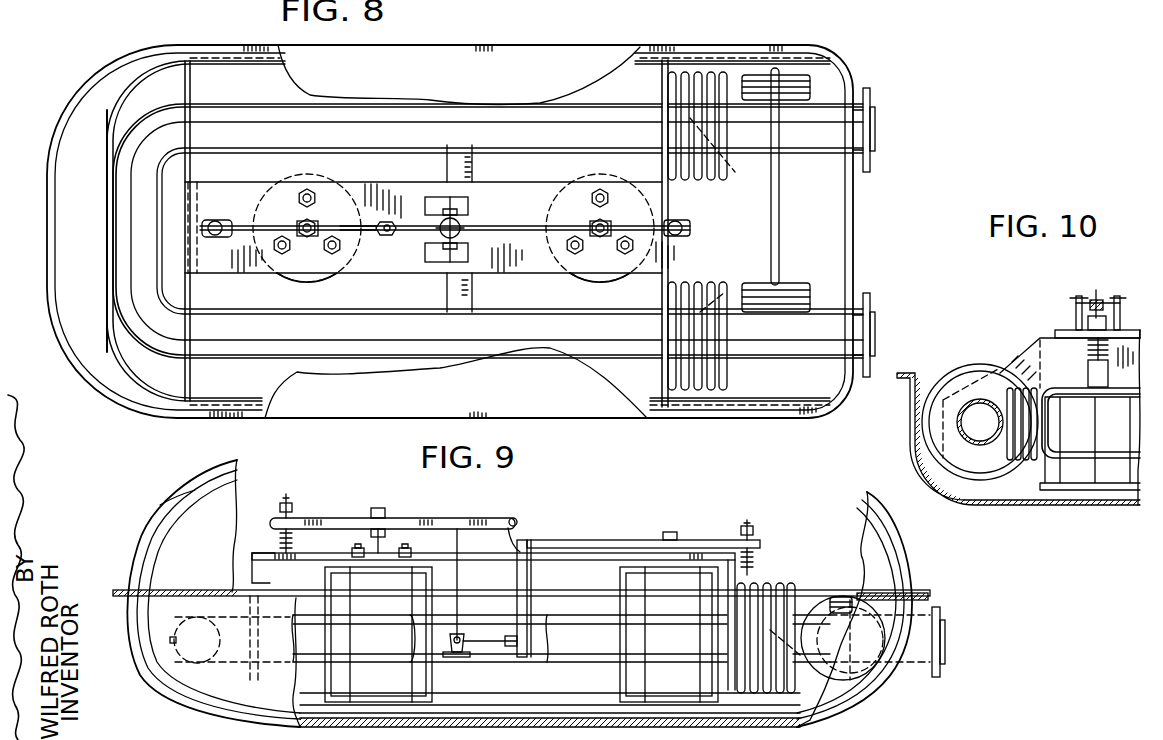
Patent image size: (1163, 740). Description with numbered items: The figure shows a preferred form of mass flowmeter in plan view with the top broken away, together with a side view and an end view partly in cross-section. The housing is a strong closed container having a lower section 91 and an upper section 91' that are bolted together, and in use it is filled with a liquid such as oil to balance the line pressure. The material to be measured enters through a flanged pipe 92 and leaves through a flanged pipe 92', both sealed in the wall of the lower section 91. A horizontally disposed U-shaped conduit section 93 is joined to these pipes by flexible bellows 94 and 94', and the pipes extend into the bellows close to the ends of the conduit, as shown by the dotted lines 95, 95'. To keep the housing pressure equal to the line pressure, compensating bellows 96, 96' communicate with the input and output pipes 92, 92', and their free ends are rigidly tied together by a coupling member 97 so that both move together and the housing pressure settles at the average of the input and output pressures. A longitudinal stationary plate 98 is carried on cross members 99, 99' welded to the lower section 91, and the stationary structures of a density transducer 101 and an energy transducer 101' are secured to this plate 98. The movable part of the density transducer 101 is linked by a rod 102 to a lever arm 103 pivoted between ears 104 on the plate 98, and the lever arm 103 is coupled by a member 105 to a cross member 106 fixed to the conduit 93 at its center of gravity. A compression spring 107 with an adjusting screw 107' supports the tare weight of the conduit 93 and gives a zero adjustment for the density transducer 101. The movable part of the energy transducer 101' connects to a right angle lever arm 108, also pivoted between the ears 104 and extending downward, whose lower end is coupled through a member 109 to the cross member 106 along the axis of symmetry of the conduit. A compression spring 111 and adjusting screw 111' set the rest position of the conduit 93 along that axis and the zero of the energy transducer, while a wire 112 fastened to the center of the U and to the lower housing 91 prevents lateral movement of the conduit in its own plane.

In FIG. 8, the lower section 91 is at (444, 231).
In FIG. 9, the lower section 91 is at (510, 593).
In FIG. 10, the lower section 91 is at (1018, 432).
In FIG. 8, the upper section 91' is at (468, 205).
In FIG. 9, the upper section 91' is at (156, 488).
In FIG. 8, the flanged pipe 92 is at (877, 127).
In FIG. 8, the flanged pipe 92' is at (878, 335).
In FIG. 9, the flanged pipe 92' is at (888, 638).
In FIG. 10, the flanged pipe 92' is at (973, 421).
In FIG. 8, the U-shaped conduit section 93 is at (614, 118).
In FIG. 9, the U-shaped conduit section 93 is at (570, 650).
In FIG. 8, the flexible bellows 94 is at (697, 98).
In FIG. 8, the flexible bellows 94' is at (697, 318).
In FIG. 9, the flexible bellows 94' is at (766, 626).
In FIG. 10, the flexible bellows 94' is at (980, 433).
In FIG. 8, the dotted lines 95 is at (720, 147).
In FIG. 8, the dotted lines 95' is at (725, 280).
In FIG. 9, the dotted lines 95' is at (792, 662).
In FIG. 8, the compensating bellows 96 is at (776, 58).
In FIG. 8, the compensating bellows 96' is at (776, 280).
In FIG. 9, the compensating bellows 96' is at (834, 591).
In FIG. 10, the compensating bellows 96' is at (1042, 356).
In FIG. 8, the coupling member 97 is at (780, 192).
In FIG. 9, the coupling member 97 is at (852, 592).
In FIG. 10, the coupling member 97 is at (1068, 388).
In FIG. 8, the stationary plate 98 is at (416, 183).
In FIG. 9, the stationary plate 98 is at (566, 553).
In FIG. 10, the stationary plate 98 is at (1058, 338).
In FIG. 8, the cross member 99 is at (647, 233).
In FIG. 9, the cross member 99 is at (521, 601).
In FIG. 10, the cross member 99 is at (1070, 349).
In FIG. 8, the cross member 99' is at (207, 231).
In FIG. 9, the cross member 99' is at (251, 570).
In FIG. 8, the density transducer 101 is at (307, 238).
In FIG. 9, the density transducer 101 is at (362, 633).
In FIG. 8, the energy transducer 101' is at (600, 239).
In FIG. 9, the energy transducer 101' is at (649, 632).
In FIG. 10, the energy transducer 101' is at (1090, 447).
In FIG. 8, the rod 102 is at (316, 222).
In FIG. 9, the rod 102 is at (382, 552).
In FIG. 8, the lever arm 103 is at (376, 235).
In FIG. 9, the lever arm 103 is at (366, 518).
In FIG. 8, the ears 104 is at (470, 222).
In FIG. 9, the ears 104 is at (534, 512).
In FIG. 10, the ears 104 is at (1116, 296).
In FIG. 8, the member 105 is at (390, 226).
In FIG. 9, the member 105 is at (458, 580).
In FIG. 8, the cross member 106 is at (472, 165).
In FIG. 9, the cross member 106 is at (466, 658).
In FIG. 9, the compression spring 107 is at (265, 538).
In FIG. 8, the adjusting screw 107' is at (223, 214).
In FIG. 9, the adjusting screw 107' is at (282, 495).
In FIG. 8, the right angle lever arm 108 is at (505, 228).
In FIG. 9, the right angle lever arm 108 is at (636, 530).
In FIG. 10, the right angle lever arm 108 is at (1108, 322).
In FIG. 9, the member 109 is at (500, 636).
In FIG. 9, the compression spring 111 is at (766, 558).
In FIG. 8, the adjusting screw 111' is at (685, 214).
In FIG. 9, the adjusting screw 111' is at (767, 522).
In FIG. 10, the adjusting screw 111' is at (1096, 287).
In FIG. 8, the wire 112 is at (106, 168).
In FIG. 9, the wire 112 is at (170, 638).